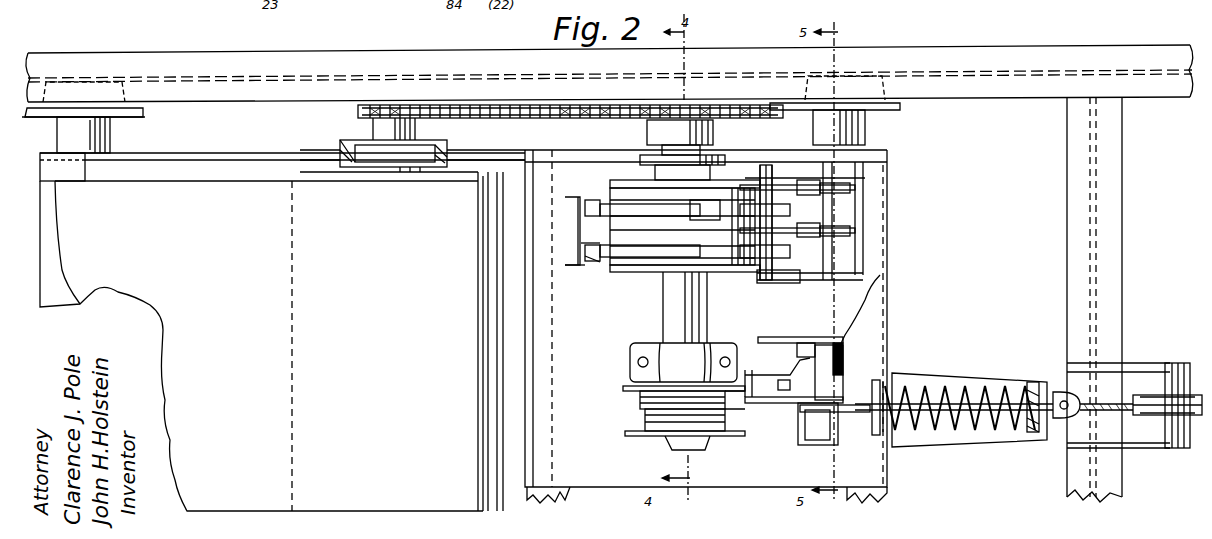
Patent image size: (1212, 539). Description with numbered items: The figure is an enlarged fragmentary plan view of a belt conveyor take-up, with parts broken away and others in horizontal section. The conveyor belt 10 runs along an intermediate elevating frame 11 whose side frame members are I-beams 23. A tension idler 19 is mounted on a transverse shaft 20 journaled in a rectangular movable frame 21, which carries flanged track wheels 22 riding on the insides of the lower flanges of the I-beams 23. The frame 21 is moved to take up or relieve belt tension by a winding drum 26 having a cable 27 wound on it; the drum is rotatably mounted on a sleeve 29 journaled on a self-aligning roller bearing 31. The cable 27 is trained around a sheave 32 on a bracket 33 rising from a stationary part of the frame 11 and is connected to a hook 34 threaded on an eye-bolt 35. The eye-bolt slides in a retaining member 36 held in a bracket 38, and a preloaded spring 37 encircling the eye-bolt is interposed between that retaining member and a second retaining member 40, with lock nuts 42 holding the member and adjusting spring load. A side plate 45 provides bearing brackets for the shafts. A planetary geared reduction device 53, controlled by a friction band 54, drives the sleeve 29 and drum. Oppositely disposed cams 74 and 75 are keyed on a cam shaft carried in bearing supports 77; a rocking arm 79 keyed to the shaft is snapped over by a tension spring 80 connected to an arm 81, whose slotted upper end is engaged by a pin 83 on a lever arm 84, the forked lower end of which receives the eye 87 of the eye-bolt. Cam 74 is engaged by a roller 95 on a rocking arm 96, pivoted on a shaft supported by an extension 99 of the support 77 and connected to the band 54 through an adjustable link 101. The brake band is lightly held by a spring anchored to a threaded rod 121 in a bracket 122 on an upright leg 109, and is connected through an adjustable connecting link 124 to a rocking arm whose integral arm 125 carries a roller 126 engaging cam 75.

The conveyor belt 10 is at (200, 180).
The intermediate elevating frame 11 is at (316, 54).
The tension idler 19 is at (306, 177).
The transverse shaft 20 is at (372, 130).
The movable frame 21 is at (175, 155).
The flanged track wheels 22 is at (128, 128).
The I-beams 23 is at (280, 104).
The winding drum 26 is at (628, 436).
The cable 27 is at (752, 420).
The sleeve 29 is at (708, 312).
The self-aligning roller bearing 31 is at (650, 343).
The sheave 32 is at (1140, 448).
The bracket 33 is at (1132, 364).
The hook 34 is at (1054, 366).
The eye-bolt 35 is at (1005, 379).
The retaining member 36 is at (1026, 431).
The preloaded spring 37 is at (952, 380).
The bracket 38 is at (1030, 378).
The retaining member 40 is at (888, 352).
The lock nuts 42 is at (864, 421).
The side plate 45 is at (888, 152).
The planetary geared reduction device 53 is at (610, 185).
The friction band 54 is at (568, 198).
The cam 74 is at (886, 170).
The cam 75 is at (850, 224).
The bearing supports 77 is at (880, 275).
The rocking arm 79 is at (844, 362).
The tension spring 80 is at (802, 343).
The arm 81 is at (780, 336).
The pin 83 is at (759, 372).
The lever arm 84 is at (768, 403).
The eye 87 is at (802, 412).
The roller 95 is at (807, 180).
The rocking arm 96 is at (791, 174).
The extension 99 is at (774, 284).
The adjustable link 101 is at (756, 168).
The upright leg 109 is at (562, 231).
The threaded rod 121 is at (601, 264).
The bracket 122 is at (580, 265).
The adjustable connecting link 124 is at (778, 256).
The arm 125 is at (785, 231).
The roller 126 is at (846, 213).